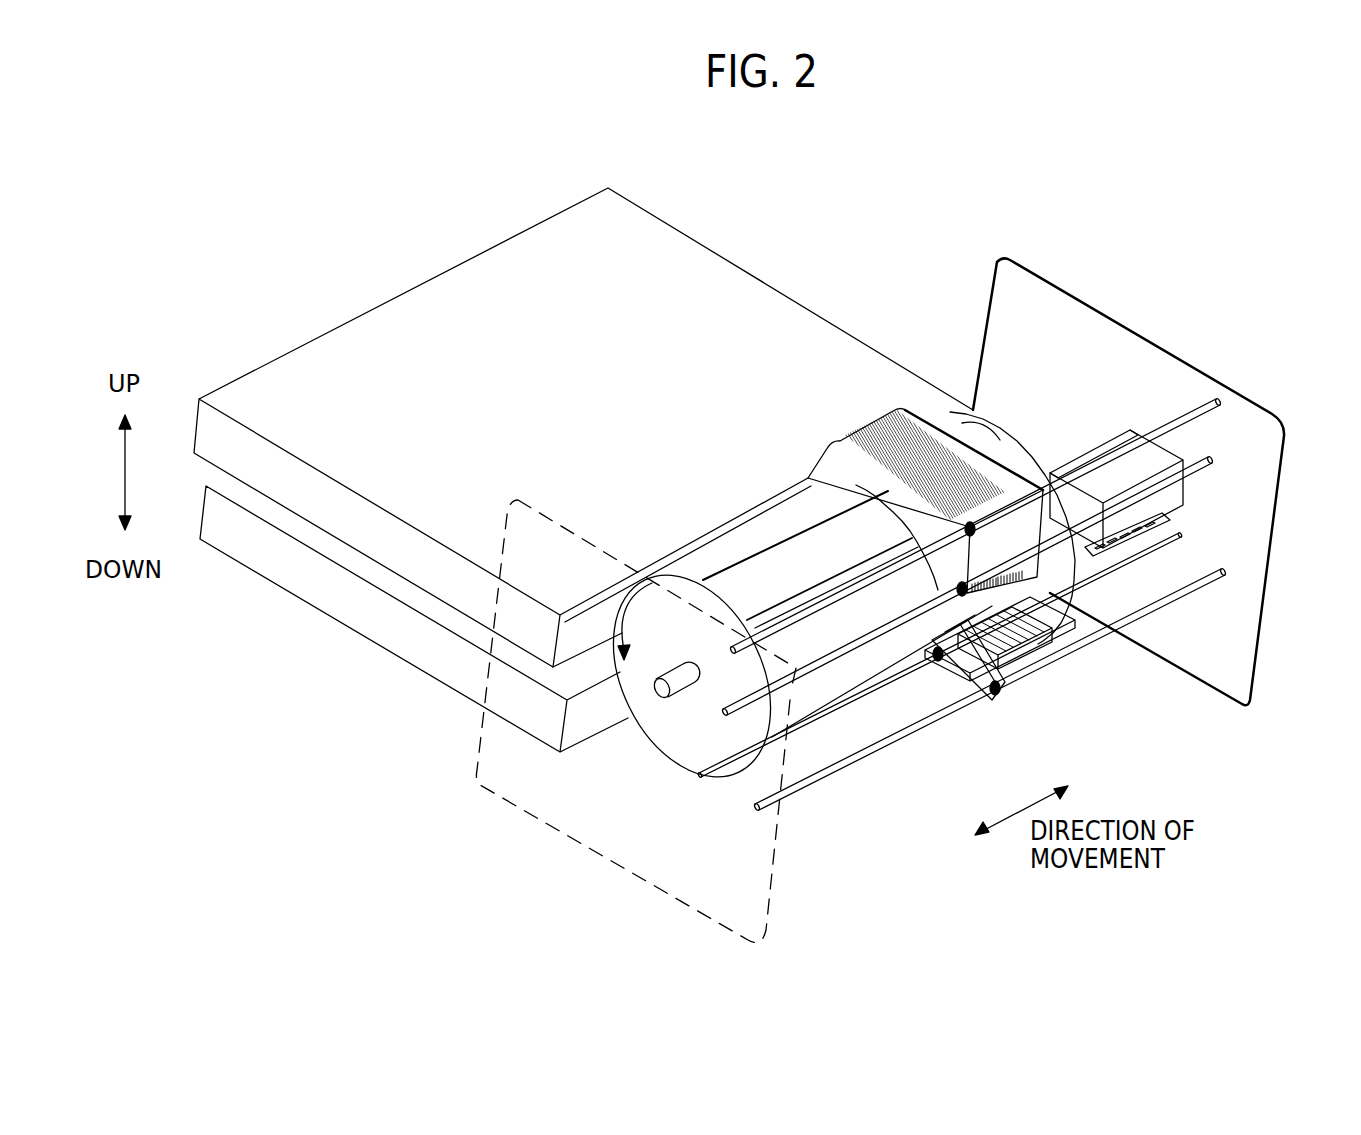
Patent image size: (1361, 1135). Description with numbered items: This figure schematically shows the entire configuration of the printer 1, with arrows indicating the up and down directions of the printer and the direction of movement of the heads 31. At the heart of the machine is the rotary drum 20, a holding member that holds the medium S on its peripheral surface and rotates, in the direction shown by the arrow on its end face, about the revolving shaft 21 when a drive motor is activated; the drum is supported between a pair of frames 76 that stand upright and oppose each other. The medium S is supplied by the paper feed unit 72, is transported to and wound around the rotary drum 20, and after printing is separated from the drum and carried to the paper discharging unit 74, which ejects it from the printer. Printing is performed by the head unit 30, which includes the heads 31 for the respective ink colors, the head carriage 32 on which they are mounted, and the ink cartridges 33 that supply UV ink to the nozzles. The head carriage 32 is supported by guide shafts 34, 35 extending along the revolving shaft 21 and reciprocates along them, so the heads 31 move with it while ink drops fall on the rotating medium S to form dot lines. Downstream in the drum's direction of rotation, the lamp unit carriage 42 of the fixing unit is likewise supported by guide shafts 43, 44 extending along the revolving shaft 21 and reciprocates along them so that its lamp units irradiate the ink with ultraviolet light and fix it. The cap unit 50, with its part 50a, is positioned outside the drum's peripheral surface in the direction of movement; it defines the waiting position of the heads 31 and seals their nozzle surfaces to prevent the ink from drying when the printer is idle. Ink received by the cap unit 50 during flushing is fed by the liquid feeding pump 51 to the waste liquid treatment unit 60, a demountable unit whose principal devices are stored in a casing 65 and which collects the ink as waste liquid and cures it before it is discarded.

The recording apparatus 1 is at (392, 238).
The rotary drum 20 is at (652, 715).
The revolving shaft 21 is at (677, 700).
The head unit 30 is at (875, 627).
The heads 31 is at (968, 680).
The head carriage 32 is at (1012, 667).
The ink cartridges 33 is at (1040, 665).
The guide shaft 34 is at (1195, 589).
The guide shaft 35 is at (1180, 537).
The lamp unit carriage 42 is at (1003, 447).
The guide shaft 43 is at (1196, 477).
The guide shaft 44 is at (1188, 412).
The cap unit 50 is at (852, 494).
The guide plate slots 50a is at (1170, 527).
The liquid feeding pump 51 is at (833, 522).
The waste liquid treatment unit 60 is at (1175, 445).
The casing 65 is at (1112, 442).
The paper feed unit 72 is at (260, 555).
The paper discharging unit 74 is at (750, 285).
The frames 76 is at (1037, 278).
The medium S is at (770, 520).